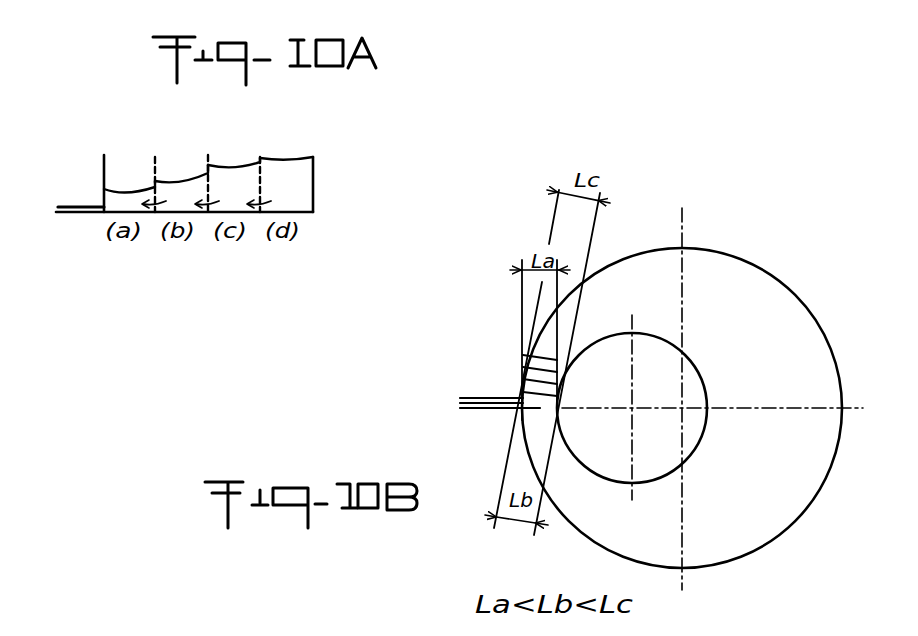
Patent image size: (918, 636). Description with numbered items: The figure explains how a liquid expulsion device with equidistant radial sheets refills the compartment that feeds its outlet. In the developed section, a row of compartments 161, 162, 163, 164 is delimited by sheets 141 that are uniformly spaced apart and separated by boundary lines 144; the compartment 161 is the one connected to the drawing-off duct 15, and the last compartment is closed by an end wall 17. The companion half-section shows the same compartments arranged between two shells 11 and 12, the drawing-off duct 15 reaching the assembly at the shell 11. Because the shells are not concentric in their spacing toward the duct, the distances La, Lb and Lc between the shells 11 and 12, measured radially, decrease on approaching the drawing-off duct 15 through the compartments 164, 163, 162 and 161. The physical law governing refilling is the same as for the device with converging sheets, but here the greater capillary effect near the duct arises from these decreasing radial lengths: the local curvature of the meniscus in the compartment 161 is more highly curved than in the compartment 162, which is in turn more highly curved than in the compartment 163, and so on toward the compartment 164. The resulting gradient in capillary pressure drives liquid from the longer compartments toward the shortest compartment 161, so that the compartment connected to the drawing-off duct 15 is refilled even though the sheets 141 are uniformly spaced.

In FIG. 10B, the shell 11 is at (775, 277).
In FIG. 10B, the shell 12 is at (670, 344).
In FIG. 10A, the drawing-off duct 15 is at (62, 206).
In FIG. 10B, the drawing-off duct 15 is at (468, 398).
In FIG. 10A, the end wall 17 is at (296, 183).
In FIG. 10A, the sheets 141 is at (208, 153).
In FIG. 10B, the sheets 141 is at (569, 341).
In FIG. 10A, the boundary line 144 is at (217, 186).
In FIG. 10A, the compartment 161 is at (125, 176).
In FIG. 10B, the compartment 161 is at (518, 416).
In FIG. 10A, the compartment 162 is at (176, 176).
In FIG. 10B, the compartment 162 is at (520, 388).
In FIG. 10A, the compartment 163 is at (229, 163).
In FIG. 10B, the compartment 163 is at (518, 363).
In FIG. 10A, the compartment 164 is at (290, 151).
In FIG. 10B, the compartment 164 is at (553, 378).